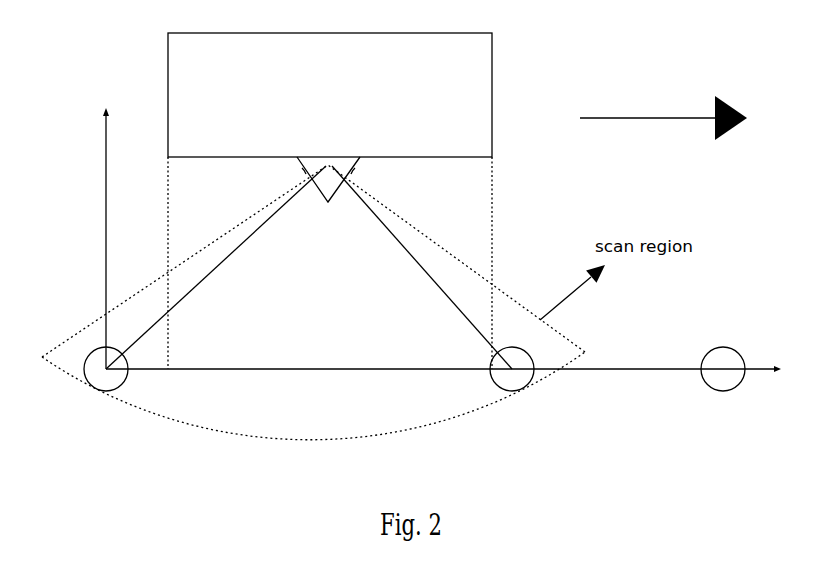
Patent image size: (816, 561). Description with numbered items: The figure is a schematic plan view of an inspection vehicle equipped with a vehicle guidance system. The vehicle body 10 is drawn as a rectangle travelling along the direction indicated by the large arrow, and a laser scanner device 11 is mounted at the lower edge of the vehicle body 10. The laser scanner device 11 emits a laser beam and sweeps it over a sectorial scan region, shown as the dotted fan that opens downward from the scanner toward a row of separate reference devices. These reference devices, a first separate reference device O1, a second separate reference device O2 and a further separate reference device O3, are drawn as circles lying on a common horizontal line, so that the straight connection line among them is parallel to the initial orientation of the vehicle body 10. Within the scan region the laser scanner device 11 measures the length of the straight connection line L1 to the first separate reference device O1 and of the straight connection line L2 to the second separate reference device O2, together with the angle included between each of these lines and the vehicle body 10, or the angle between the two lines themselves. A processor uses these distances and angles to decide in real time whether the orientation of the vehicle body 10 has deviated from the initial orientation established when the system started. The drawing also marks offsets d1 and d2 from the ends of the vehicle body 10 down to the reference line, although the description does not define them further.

The vehicle body 10 is at (330, 95).
The laser scanner device 11 is at (328, 179).
The first separate reference device O1 is at (106, 378).
The second separate reference device O2 is at (506, 373).
The further separate reference device O3 is at (723, 380).
The straight connection line to first reference device L1 is at (216, 267).
The straight connection line to second reference device L2 is at (422, 267).
The lateral offset of first object d1 is at (159, 263).
The lateral offset of second object d2 is at (503, 263).